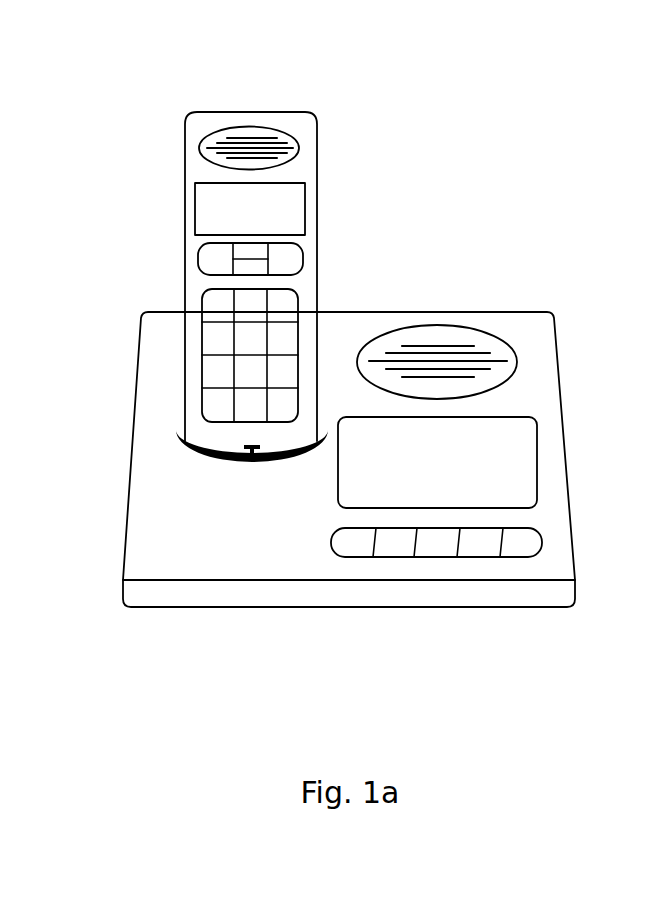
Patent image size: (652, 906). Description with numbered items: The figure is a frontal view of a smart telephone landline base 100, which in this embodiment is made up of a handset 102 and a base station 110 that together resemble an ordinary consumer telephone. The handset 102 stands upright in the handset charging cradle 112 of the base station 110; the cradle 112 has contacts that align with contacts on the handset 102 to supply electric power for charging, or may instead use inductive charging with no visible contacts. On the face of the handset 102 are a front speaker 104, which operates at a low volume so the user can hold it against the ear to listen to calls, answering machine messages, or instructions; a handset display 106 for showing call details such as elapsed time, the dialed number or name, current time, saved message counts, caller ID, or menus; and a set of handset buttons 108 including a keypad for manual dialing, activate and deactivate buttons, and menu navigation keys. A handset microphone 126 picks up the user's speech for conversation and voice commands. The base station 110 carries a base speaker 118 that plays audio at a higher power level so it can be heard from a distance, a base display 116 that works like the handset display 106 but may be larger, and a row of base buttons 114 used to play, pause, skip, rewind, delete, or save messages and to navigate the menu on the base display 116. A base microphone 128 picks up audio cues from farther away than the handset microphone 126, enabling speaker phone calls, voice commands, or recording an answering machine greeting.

The smart telephone landline base 100 is at (405, 213).
The handset 102 is at (310, 110).
The front speaker 104 is at (304, 148).
The handset display 106 is at (304, 208).
The handset buttons 108 is at (192, 282).
The base station 110 is at (439, 311).
The handset charging cradle 112 is at (178, 436).
The base buttons 114 is at (325, 547).
The base display 116 is at (537, 445).
The base speaker 118 is at (489, 330).
The handset microphone 126 is at (252, 462).
The base microphone 128 is at (258, 546).